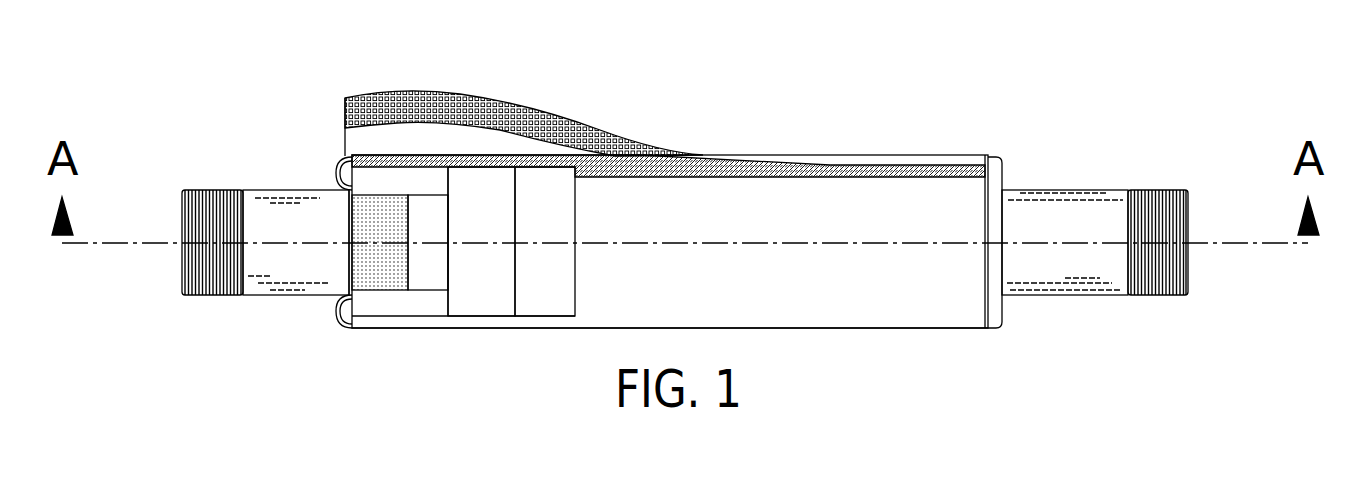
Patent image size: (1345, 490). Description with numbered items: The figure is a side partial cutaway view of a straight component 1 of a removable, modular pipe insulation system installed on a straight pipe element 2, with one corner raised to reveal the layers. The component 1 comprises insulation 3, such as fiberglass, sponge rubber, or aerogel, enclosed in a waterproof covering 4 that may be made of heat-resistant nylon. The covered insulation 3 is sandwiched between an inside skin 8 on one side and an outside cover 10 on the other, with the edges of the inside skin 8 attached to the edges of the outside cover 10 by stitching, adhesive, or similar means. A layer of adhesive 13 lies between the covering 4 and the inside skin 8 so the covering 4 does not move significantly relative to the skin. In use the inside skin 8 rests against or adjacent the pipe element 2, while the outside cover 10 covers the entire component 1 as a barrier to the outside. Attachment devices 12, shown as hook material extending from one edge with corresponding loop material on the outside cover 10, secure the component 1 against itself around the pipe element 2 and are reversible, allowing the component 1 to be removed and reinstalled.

The component 1 is at (897, 198).
The pipe element 2 is at (1038, 265).
The insulation 3 is at (487, 287).
The waterproof covering 4 is at (430, 273).
The inside skin 8 is at (348, 255).
The outside cover 10 is at (795, 298).
The attachment devices 12 is at (418, 107).
The layer of adhesive 13 is at (372, 267).